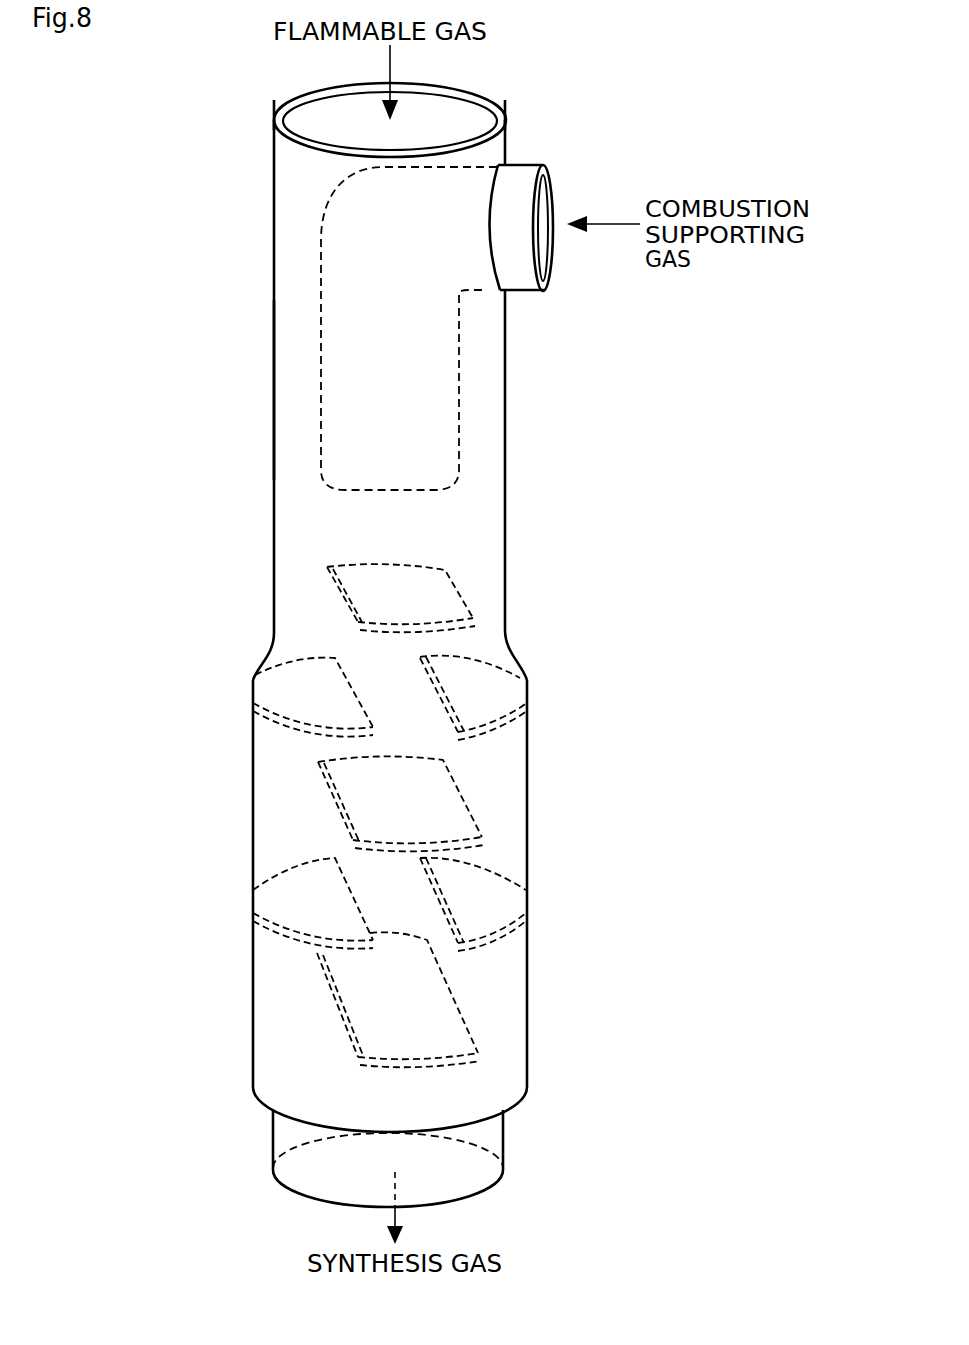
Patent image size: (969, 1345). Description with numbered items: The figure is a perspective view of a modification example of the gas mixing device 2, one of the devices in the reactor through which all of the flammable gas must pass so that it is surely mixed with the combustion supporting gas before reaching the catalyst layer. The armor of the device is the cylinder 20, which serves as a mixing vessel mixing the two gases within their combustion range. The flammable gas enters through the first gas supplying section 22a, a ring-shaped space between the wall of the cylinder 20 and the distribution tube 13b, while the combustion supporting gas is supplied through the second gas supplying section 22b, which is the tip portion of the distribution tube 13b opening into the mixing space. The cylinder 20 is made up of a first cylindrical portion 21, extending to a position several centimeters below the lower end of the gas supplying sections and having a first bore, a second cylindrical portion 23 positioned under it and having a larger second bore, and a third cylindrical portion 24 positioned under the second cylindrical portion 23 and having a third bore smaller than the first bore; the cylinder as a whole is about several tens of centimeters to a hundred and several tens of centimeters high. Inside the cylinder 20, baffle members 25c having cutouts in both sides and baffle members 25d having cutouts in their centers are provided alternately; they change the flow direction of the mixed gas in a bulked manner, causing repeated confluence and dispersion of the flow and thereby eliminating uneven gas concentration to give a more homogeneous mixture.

The gas mixing device 2 is at (195, 80).
The cylinder 20 is at (432, 645).
The first cylindrical portion 21 is at (505, 445).
The first gas supplying section 22a is at (295, 452).
The second gas supplying section 22b is at (350, 440).
The distribution tube 13b is at (460, 388).
The second cylindrical portion 23 is at (526, 830).
The third cylindrical portion 24 is at (503, 1138).
The baffle member 25c is at (425, 593).
The baffle member 25d is at (470, 677).